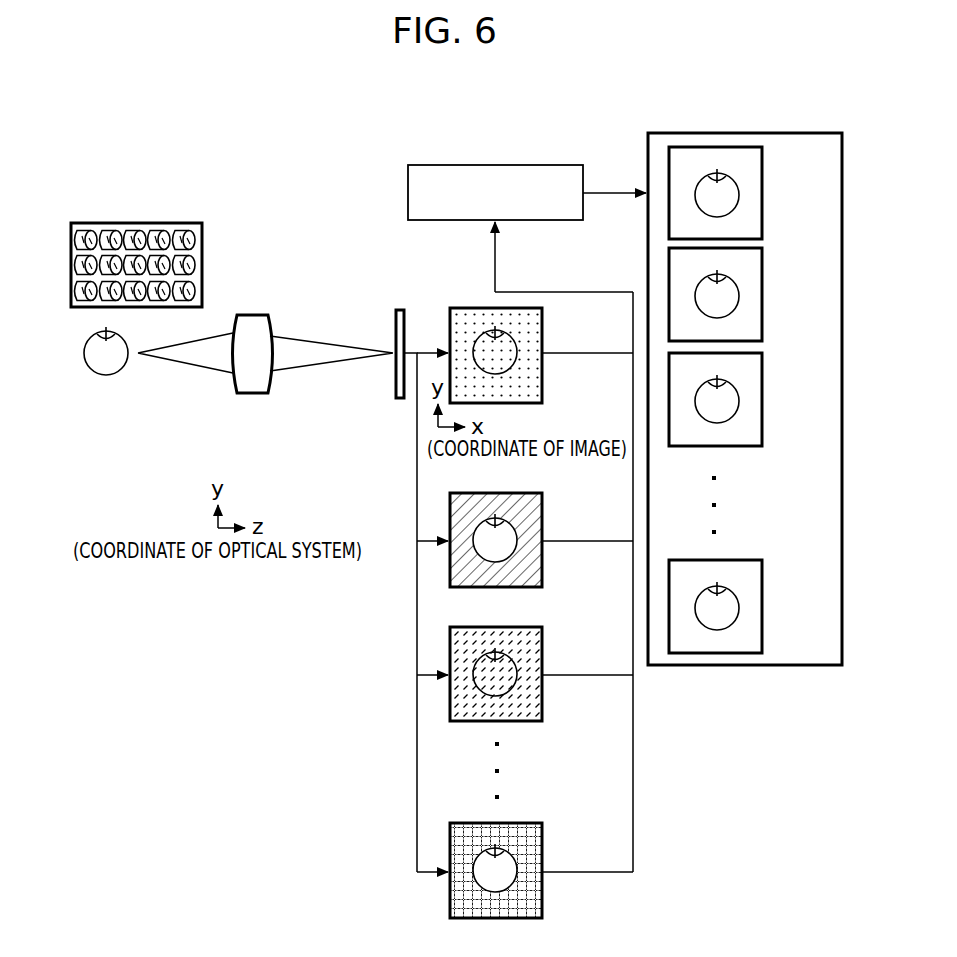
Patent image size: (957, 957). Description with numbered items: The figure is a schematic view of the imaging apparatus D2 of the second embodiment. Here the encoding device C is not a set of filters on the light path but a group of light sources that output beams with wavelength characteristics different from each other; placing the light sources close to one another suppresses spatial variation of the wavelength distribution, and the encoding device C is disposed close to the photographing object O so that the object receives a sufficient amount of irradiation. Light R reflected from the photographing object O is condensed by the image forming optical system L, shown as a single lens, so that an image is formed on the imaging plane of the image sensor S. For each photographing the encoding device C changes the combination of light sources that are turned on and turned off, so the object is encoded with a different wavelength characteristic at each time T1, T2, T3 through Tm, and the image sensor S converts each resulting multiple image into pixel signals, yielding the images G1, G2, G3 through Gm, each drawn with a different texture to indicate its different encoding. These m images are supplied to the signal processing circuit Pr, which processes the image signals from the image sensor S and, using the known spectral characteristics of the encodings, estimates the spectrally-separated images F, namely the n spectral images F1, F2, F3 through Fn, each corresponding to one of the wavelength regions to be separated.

The imaging apparatus D2 is at (146, 139).
The encoding device C is at (174, 224).
The photographing object O is at (84, 354).
The light rays R is at (322, 341).
The image forming optical system L is at (254, 395).
The image sensor S is at (400, 400).
The signal processing circuit Pr is at (496, 166).
The spectrally-separated images F is at (744, 133).
The spectral image F1 is at (762, 190).
The spectral image F2 is at (762, 292).
The spectral image F3 is at (762, 397).
The spectral image Fn is at (762, 604).
The first time T1 is at (447, 314).
The second time T2 is at (447, 501).
The third time T3 is at (447, 635).
The m-th time Tm is at (451, 831).
The image G1 is at (542, 330).
The image G2 is at (542, 515).
The image G3 is at (542, 649).
The image Gm is at (542, 846).